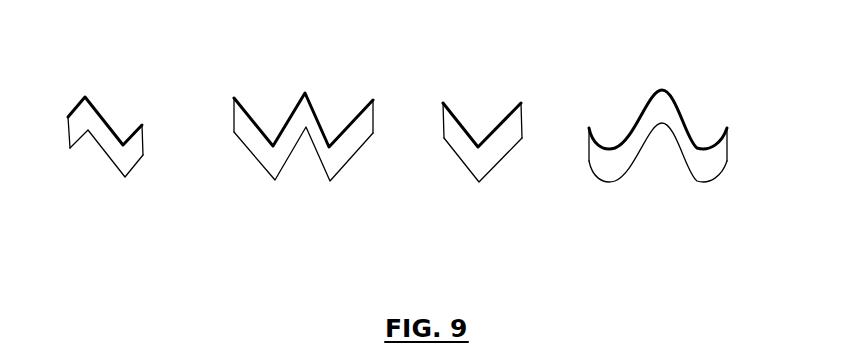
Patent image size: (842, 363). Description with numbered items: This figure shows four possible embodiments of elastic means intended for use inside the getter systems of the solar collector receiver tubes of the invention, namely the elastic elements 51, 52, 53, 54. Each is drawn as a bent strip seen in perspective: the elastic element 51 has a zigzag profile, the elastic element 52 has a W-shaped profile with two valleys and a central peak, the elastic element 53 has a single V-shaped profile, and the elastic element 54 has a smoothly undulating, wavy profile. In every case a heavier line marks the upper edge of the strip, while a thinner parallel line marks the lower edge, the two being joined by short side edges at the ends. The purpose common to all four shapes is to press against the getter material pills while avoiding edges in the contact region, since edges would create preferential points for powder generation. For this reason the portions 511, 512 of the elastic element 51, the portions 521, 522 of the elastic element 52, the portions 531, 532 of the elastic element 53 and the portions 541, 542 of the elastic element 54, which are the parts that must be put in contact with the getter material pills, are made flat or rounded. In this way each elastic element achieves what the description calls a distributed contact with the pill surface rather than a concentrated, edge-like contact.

The elastic element 51 is at (107, 112).
The contact portion 511 is at (75, 125).
The contact portion 512 is at (133, 152).
The elastic element 52 is at (322, 120).
The contact portion 521 is at (246, 133).
The contact portion 522 is at (353, 140).
The elastic element 53 is at (462, 122).
The contact portion 531 is at (469, 147).
The contact portion 532 is at (510, 137).
The elastic element 54 is at (652, 93).
The contact portion 541 is at (608, 165).
The contact portion 542 is at (717, 162).